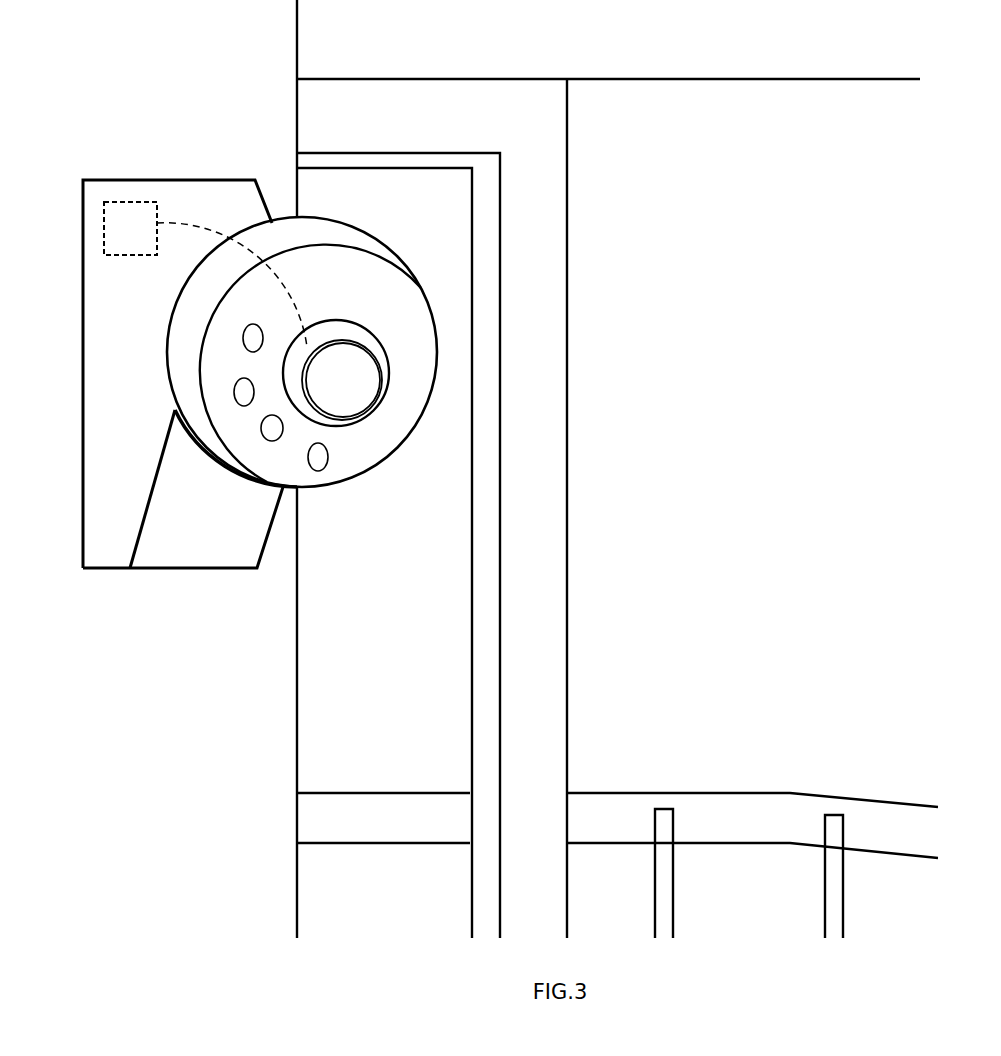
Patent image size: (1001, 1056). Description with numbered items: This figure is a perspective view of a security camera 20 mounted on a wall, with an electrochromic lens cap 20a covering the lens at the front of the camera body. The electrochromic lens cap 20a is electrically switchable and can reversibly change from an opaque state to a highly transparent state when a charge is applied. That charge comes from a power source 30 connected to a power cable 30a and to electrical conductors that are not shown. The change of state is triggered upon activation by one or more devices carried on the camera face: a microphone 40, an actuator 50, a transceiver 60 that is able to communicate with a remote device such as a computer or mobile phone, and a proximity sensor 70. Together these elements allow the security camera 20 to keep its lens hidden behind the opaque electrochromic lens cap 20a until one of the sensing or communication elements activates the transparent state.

The security camera 20 is at (446, 315).
The electrochromic lens cap 20a is at (353, 392).
The power source 30 is at (117, 218).
The power cable 30a is at (215, 232).
The microphone 40 is at (242, 342).
The actuator 50 is at (233, 397).
The transceiver 60 is at (265, 440).
The proximity sensor 70 is at (318, 470).